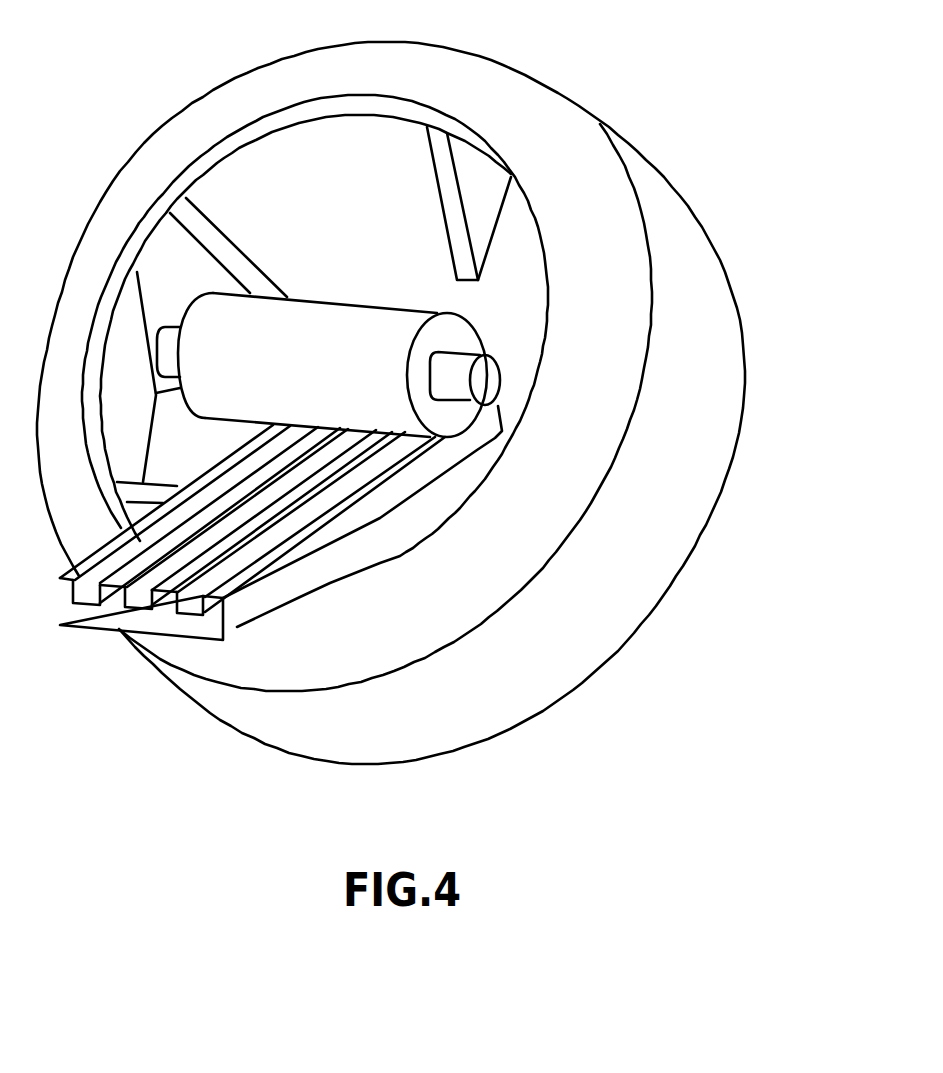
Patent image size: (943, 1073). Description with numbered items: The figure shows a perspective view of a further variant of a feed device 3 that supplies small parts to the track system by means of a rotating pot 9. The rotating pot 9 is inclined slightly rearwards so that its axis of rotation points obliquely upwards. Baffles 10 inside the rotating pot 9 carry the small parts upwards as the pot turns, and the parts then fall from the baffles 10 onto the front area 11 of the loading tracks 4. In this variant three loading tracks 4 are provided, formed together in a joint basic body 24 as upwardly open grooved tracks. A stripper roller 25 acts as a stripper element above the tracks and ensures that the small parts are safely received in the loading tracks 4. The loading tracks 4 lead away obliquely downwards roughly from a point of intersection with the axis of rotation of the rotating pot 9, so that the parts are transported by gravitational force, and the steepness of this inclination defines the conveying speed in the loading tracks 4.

The feed device 3 is at (706, 591).
The loading tracks 4 is at (90, 600).
The rotating pot 9 is at (710, 334).
The baffles 10 is at (258, 270).
The front area 11 is at (461, 468).
The joint basic body 24 is at (112, 617).
The stripper roller 25 is at (210, 320).